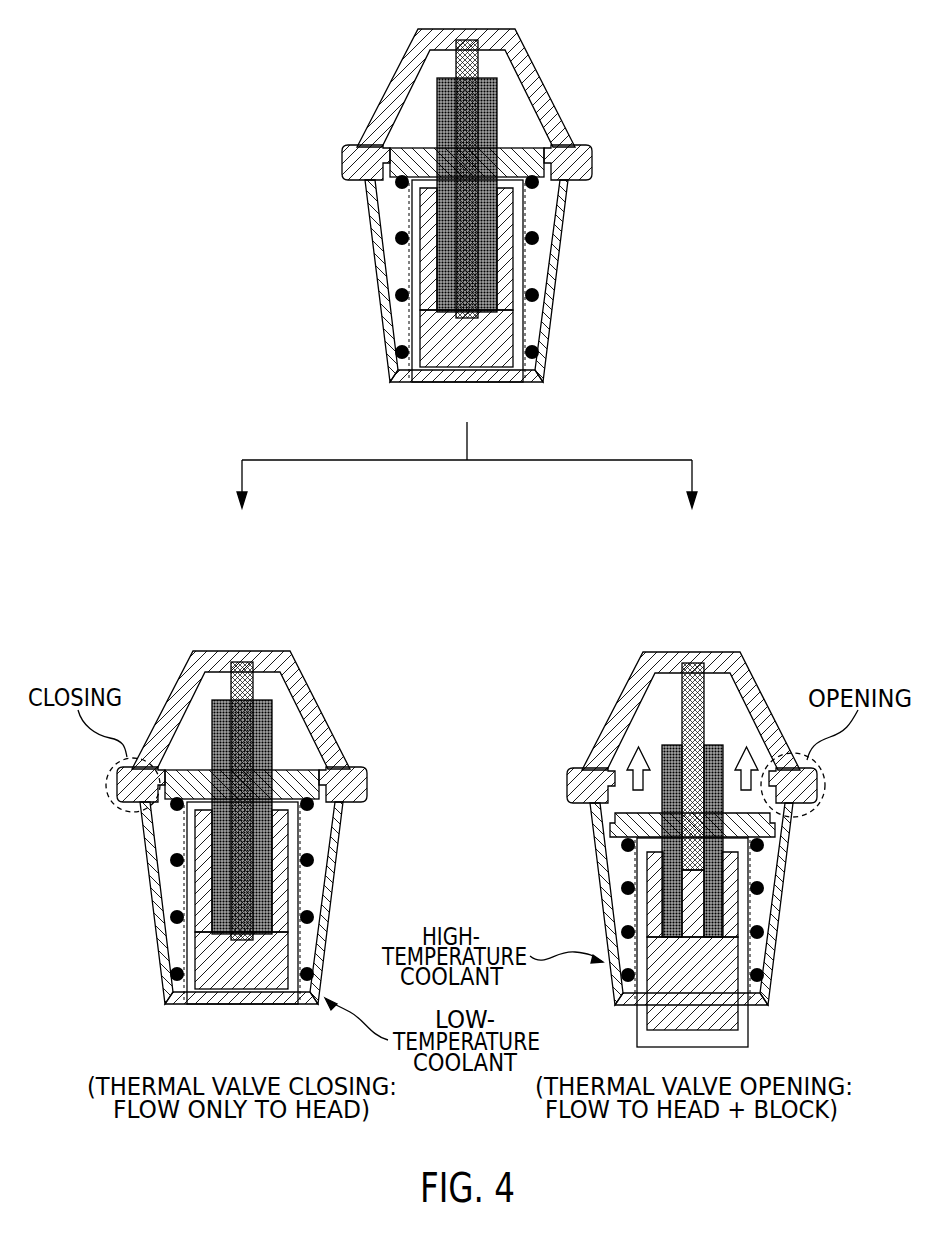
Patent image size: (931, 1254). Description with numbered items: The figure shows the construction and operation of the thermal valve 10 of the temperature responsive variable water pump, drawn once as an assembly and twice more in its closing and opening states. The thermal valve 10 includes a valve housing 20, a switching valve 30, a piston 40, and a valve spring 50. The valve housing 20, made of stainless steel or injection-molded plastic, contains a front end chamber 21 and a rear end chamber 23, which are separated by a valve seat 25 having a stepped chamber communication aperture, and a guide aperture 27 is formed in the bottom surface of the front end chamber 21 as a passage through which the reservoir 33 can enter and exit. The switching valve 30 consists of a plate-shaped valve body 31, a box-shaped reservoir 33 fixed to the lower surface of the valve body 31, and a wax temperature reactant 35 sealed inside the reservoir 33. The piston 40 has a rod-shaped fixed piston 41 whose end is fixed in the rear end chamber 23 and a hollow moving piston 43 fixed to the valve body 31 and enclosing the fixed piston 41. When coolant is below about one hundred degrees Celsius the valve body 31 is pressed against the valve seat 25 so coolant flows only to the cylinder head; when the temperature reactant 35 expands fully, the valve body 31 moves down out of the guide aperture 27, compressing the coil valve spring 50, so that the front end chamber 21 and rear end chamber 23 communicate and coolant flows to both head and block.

The thermal valve 10 is at (318, 74).
The valve housing 20 is at (222, 133).
The front end chamber 21 is at (392, 210).
The rear end chamber 23 is at (408, 118).
The valve seat 25 is at (357, 163).
The guide aperture 27 is at (433, 383).
The switching valve 30 is at (635, 237).
The valve body 31 is at (540, 168).
The reservoir 33 is at (520, 261).
The temperature reactant 35 is at (503, 337).
The piston 40 is at (633, 50).
The fixed piston 41 is at (475, 60).
The moving piston 43 is at (490, 90).
The valve spring 50 is at (397, 294).